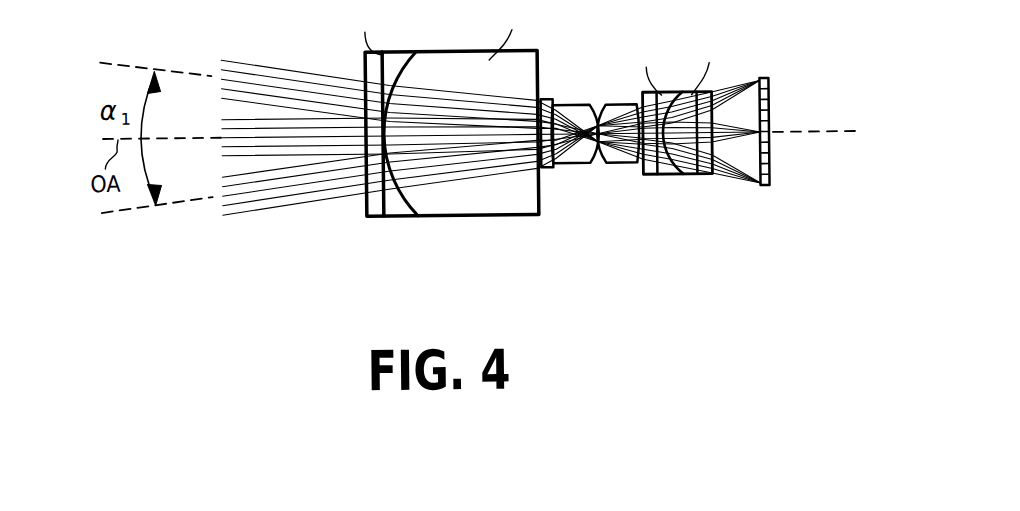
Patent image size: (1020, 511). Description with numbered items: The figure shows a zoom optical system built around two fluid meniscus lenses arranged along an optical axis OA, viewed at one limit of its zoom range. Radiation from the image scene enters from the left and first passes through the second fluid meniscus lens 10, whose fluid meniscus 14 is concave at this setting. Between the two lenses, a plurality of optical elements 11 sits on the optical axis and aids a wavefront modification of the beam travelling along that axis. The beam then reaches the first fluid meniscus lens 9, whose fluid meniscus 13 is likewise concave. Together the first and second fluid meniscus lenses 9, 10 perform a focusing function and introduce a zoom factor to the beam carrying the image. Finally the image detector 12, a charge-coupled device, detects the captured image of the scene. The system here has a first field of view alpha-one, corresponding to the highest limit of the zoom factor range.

The first fluid meniscus lens 9 is at (678, 179).
The second fluid meniscus lens 10 is at (451, 217).
The plurality of optical elements 11 is at (620, 101).
The image detector 12 is at (762, 81).
The fluid meniscus 13 is at (685, 95).
The fluid meniscus 14 is at (398, 60).